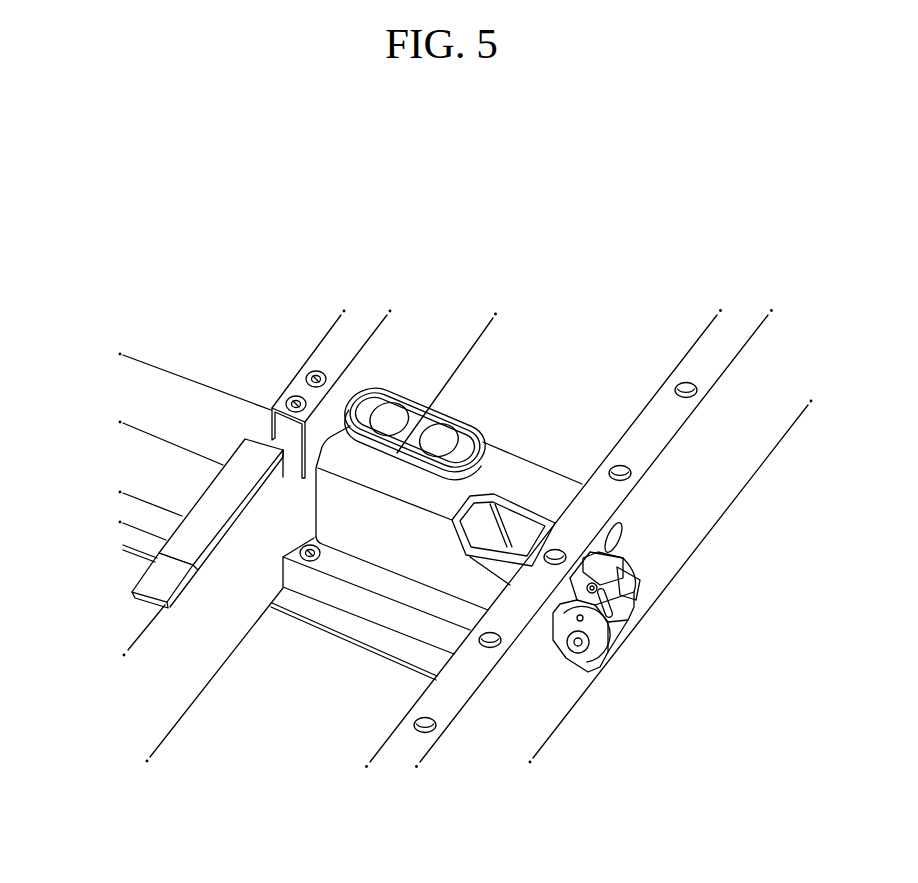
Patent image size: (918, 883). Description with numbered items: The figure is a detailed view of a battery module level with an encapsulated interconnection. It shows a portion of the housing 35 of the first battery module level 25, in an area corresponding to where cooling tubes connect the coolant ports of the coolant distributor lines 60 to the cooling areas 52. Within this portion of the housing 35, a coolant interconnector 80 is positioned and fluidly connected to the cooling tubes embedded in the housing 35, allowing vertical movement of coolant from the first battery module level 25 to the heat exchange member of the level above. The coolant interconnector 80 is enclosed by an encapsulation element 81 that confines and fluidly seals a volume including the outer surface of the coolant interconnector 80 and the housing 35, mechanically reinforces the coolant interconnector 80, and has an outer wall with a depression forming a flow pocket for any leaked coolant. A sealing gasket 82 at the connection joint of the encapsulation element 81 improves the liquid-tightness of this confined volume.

The first battery module level 25 is at (252, 347).
The housing 35 is at (702, 495).
The cooling area 52 is at (160, 398).
The coolant distributor line 60 is at (617, 634).
The coolant interconnector 80 is at (368, 420).
The encapsulation element 81 is at (500, 484).
The sealing gasket 82 is at (399, 392).